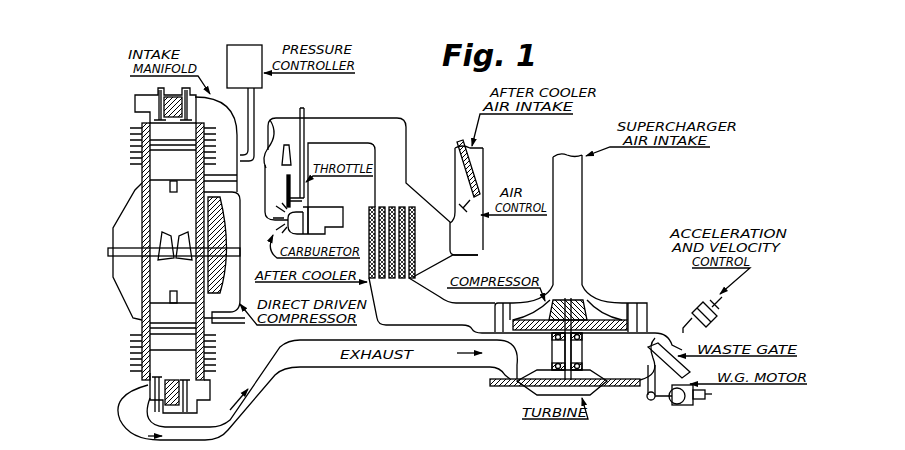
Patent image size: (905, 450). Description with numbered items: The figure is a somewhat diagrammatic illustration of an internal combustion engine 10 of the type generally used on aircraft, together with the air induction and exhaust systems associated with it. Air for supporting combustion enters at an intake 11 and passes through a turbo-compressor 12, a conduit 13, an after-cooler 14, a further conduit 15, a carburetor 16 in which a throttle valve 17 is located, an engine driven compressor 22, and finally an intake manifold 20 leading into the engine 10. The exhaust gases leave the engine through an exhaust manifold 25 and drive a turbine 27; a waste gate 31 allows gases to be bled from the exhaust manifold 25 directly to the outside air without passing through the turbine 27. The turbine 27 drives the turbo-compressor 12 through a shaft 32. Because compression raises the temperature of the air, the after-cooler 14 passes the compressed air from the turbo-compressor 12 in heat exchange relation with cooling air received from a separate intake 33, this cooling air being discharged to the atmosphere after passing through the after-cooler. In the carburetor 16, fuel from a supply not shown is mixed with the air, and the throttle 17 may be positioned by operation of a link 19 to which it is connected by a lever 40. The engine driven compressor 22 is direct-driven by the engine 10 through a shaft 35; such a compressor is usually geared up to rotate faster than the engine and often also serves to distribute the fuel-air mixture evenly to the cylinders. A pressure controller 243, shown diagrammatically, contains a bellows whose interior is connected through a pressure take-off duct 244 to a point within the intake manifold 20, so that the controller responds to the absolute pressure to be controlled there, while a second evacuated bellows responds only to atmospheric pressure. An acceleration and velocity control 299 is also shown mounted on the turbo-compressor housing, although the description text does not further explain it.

The internal combustion engine 10 is at (137, 176).
The intake manifold 20 is at (230, 154).
The shaft 35 is at (107, 257).
The engine driven compressor 22 is at (229, 284).
The lever 40 is at (288, 174).
The pressure controller 243 is at (256, 69).
The pressure take-off duct 244 is at (257, 97).
The carburetor 16 is at (267, 135).
The link 19 is at (305, 109).
The conduit 15 is at (379, 118).
The throttle valve 17 is at (292, 201).
The after-cooler 14 is at (412, 207).
The intake 33 is at (482, 162).
The intake 11 is at (578, 179).
The conduit 13 is at (433, 319).
The turbo-compressor 12 is at (586, 300).
The shaft 32 is at (568, 300).
The turbine 27 is at (600, 392).
The exhaust manifold 25 is at (270, 383).
The waste gate 31 is at (671, 372).
The acceleration and velocity control 299 is at (712, 317).